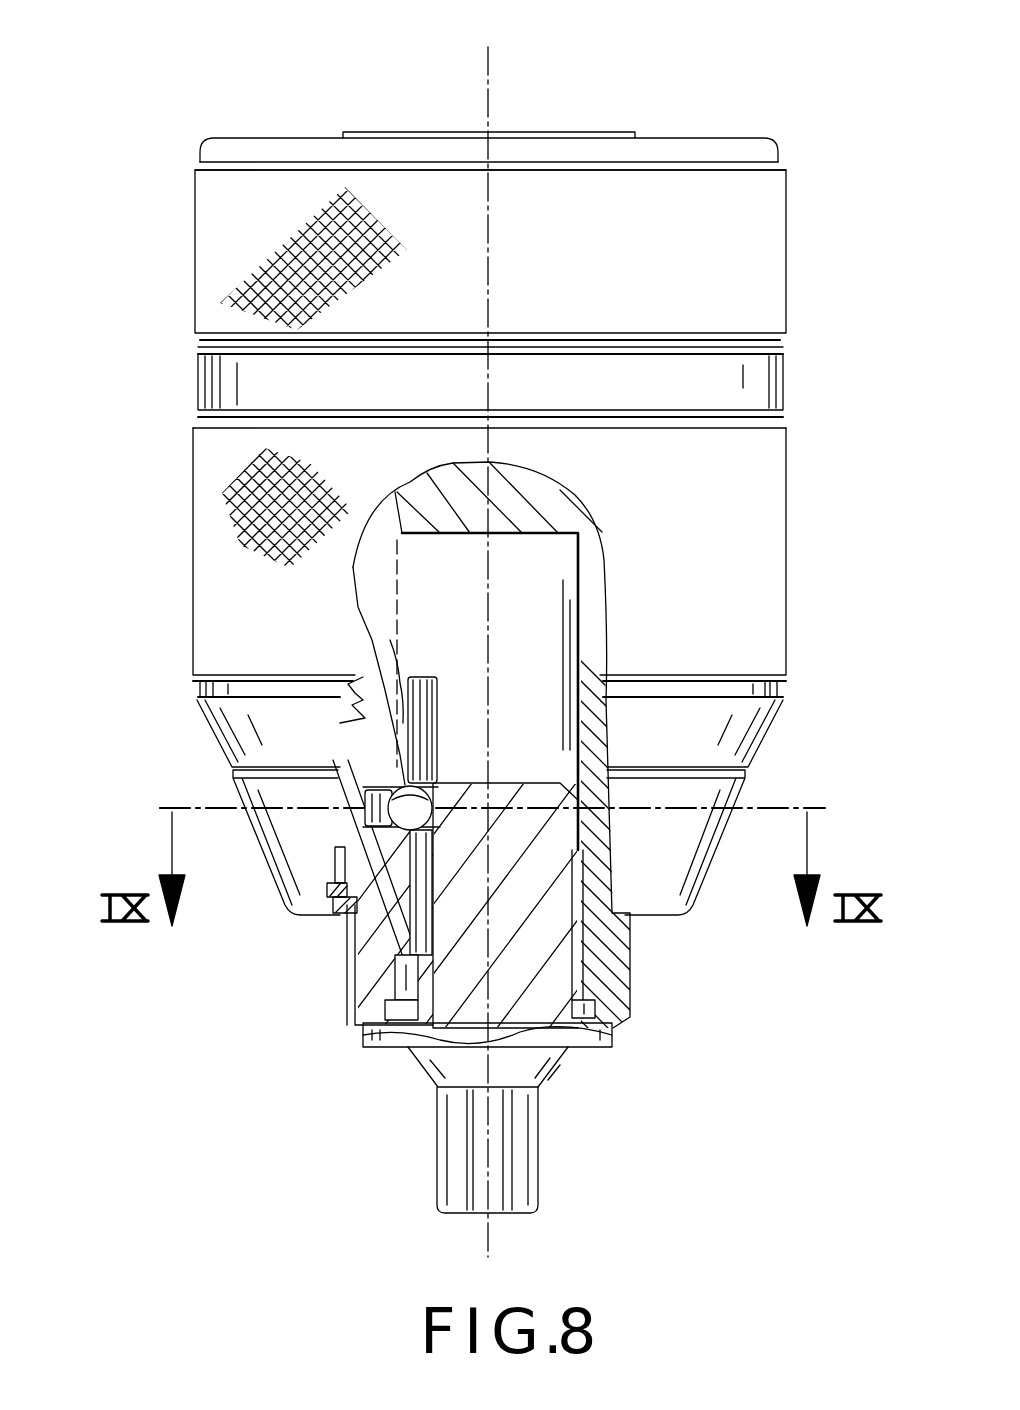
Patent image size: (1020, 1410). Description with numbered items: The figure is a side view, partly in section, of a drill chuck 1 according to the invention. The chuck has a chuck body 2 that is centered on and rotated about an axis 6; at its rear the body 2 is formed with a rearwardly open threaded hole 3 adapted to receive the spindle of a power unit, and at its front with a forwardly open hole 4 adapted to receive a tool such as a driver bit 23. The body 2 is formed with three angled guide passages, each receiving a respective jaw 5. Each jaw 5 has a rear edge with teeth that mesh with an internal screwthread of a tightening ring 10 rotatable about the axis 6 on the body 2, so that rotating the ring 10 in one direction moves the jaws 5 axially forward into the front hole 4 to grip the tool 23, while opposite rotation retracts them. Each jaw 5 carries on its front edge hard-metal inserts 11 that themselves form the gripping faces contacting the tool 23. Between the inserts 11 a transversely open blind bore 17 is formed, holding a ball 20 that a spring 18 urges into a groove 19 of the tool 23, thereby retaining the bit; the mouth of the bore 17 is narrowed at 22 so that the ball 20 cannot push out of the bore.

The drill chuck 1 is at (750, 245).
The chuck body 2 is at (612, 945).
The threaded hole 3 is at (575, 105).
The forwardly open hole 4 is at (550, 590).
The jaw 5 is at (390, 883).
The axis 6 is at (486, 62).
The tightening ring 10 is at (735, 480).
The hard-metal insert 11 is at (438, 700).
The blind bore 17 is at (368, 812).
The spring 18 is at (328, 768).
The groove 19 is at (396, 812).
The ball 20 is at (432, 795).
The narrowed mouth 22 is at (437, 770).
The driver bit 23 is at (500, 1150).